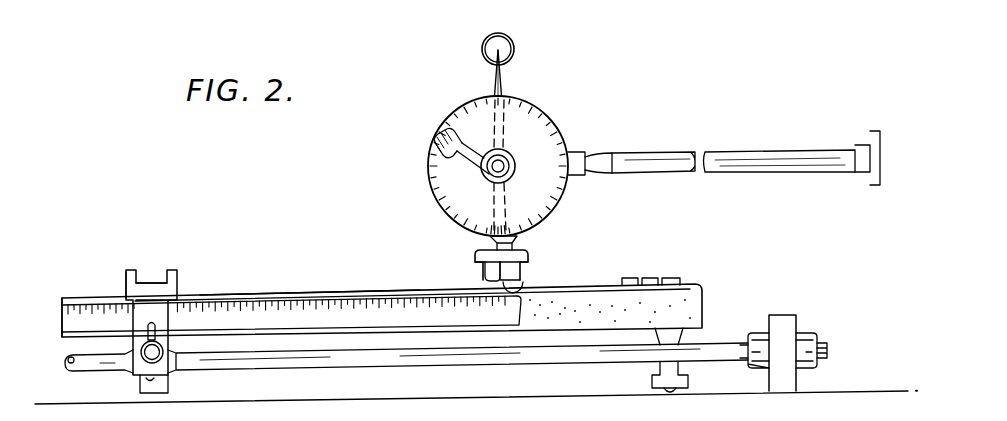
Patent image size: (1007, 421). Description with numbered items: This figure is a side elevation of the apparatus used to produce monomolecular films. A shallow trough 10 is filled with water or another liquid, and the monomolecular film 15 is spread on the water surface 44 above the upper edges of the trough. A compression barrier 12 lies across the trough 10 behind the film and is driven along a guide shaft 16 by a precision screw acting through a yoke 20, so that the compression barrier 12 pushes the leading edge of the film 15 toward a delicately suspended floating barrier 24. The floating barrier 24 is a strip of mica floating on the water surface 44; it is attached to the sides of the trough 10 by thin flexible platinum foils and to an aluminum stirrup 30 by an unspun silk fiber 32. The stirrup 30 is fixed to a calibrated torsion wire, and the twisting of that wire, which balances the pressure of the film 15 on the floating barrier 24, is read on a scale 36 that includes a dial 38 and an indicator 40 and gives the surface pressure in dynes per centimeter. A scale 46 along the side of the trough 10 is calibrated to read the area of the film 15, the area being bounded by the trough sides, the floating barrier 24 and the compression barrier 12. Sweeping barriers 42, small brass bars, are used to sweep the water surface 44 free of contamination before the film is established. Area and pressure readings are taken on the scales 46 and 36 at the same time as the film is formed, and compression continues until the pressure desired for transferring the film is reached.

The trough 10 is at (409, 289).
The compression barrier 12 is at (148, 283).
The monomolecular film 15 is at (222, 298).
The guide shaft 16 is at (383, 355).
The yoke 20 is at (126, 275).
The floating barrier 24 is at (534, 292).
The stirrup 30 is at (501, 260).
The unspun silk fiber 32 is at (478, 266).
The scale 36 is at (654, 141).
The dial 38 is at (565, 140).
The indicator 40 is at (502, 91).
The sweeping barriers 42 is at (670, 278).
The water surface 44 is at (268, 292).
The scale 46 is at (64, 322).